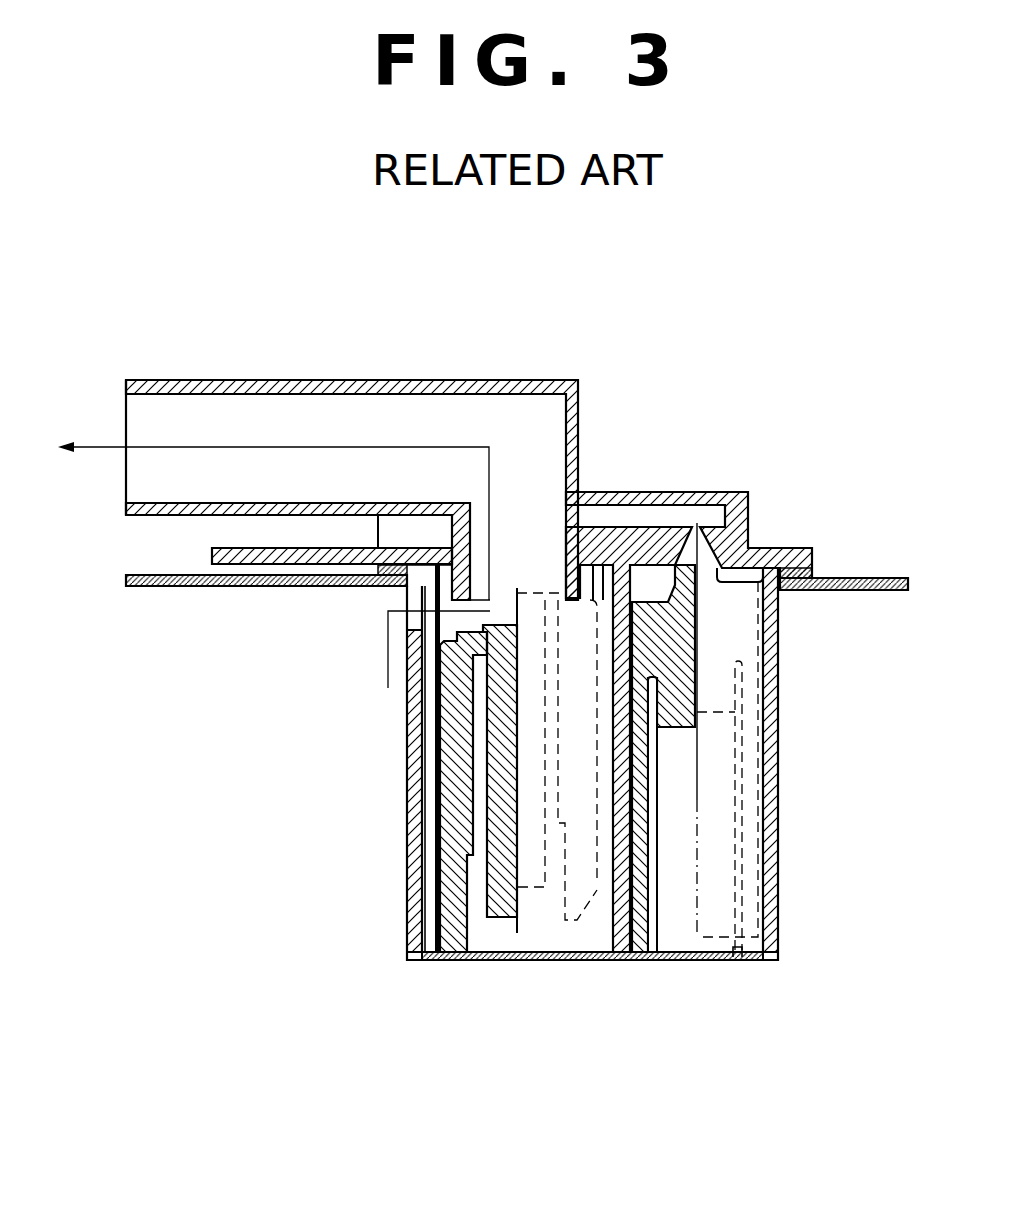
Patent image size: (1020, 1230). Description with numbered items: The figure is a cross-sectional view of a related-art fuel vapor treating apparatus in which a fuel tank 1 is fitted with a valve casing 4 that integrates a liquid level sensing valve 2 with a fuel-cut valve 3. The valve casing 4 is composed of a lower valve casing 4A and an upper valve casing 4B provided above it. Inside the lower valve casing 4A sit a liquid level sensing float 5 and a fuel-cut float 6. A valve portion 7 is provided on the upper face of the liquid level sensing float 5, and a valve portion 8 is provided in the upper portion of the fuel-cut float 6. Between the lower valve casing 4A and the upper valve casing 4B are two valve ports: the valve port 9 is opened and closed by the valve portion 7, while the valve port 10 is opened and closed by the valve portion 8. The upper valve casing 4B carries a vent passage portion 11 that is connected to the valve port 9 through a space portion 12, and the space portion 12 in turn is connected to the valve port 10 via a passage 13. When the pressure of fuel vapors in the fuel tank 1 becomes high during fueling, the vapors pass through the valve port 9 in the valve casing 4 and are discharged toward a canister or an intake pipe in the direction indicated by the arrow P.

The fuel tank 1 is at (880, 578).
The liquid level sensing valve 2 is at (420, 831).
The fuel-cut valve 3 is at (798, 800).
The valve casing 4 is at (342, 675).
The lower valve casing 4A is at (412, 893).
The upper valve casing 4B is at (500, 383).
The liquid level sensing float 5 is at (457, 905).
The fuel-cut float 6 is at (648, 940).
The valve portion 7 is at (470, 640).
The valve portion 8 is at (680, 622).
The valve port 9 is at (455, 599).
The valve port 10 is at (702, 527).
The vent passage portion 11 is at (178, 385).
The space portion 12 is at (547, 531).
The passage 13 is at (660, 520).
The arrow P is at (102, 449).